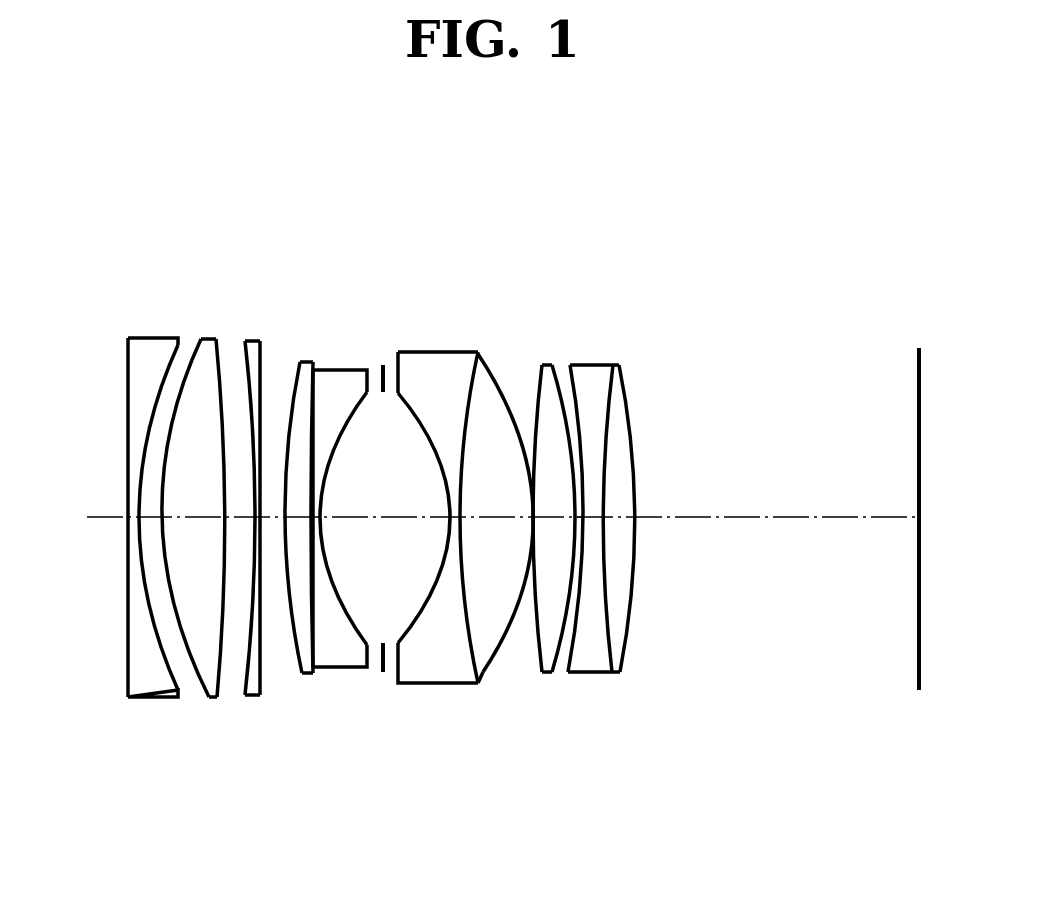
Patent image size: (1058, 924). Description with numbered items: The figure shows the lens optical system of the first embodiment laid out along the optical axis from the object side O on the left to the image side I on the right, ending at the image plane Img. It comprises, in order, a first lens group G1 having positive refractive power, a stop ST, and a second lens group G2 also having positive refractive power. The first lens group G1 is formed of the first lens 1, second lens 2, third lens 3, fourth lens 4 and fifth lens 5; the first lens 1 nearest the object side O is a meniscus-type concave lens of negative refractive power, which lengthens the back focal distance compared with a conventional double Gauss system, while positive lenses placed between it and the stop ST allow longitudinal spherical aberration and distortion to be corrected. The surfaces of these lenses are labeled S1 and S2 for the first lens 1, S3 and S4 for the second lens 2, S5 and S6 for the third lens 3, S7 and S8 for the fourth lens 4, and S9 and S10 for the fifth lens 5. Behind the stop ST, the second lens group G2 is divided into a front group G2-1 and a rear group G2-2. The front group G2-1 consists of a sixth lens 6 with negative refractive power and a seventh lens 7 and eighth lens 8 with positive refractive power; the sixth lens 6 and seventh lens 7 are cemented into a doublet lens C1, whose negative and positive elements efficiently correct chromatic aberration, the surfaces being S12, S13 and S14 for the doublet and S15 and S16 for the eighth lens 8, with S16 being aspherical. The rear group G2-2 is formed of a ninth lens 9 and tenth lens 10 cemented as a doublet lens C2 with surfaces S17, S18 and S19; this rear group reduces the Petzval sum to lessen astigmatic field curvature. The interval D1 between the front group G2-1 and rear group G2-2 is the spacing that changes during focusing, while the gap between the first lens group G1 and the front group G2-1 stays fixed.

The first lens group G1 is at (367, 217).
The second lens group G2 is at (612, 218).
The front group G2-1 is at (560, 278).
The rear group G2-2 is at (638, 278).
The first lens 1 is at (127, 548).
The second lens 2 is at (198, 518).
The third lens 3 is at (272, 512).
The fourth lens 4 is at (317, 528).
The fifth lens 5 is at (354, 564).
The sixth lens 6 is at (420, 527).
The seventh lens 7 is at (505, 527).
The eighth lens 8 is at (551, 525).
The ninth lens 9 is at (631, 533).
The tenth lens 10 is at (659, 562).
The doublet lens C1 is at (490, 763).
The doublet lens C2 is at (638, 763).
The stop ST is at (383, 643).
The lens surface S1 is at (127, 378).
The lens surface S2 is at (147, 422).
The lens surface S3 is at (194, 340).
The lens surface S4 is at (225, 346).
The lens surface S5 is at (246, 344).
The lens surface S6 is at (262, 345).
The lens surface S7 is at (300, 366).
The lens surface S8 is at (316, 372).
The lens surface S9 is at (316, 495).
The lens surface S10 is at (327, 548).
The lens surface S12 is at (427, 438).
The lens surface S13 is at (470, 352).
The lens surface S14 is at (490, 355).
The lens surface S15 is at (533, 408).
The lens surface S16 is at (573, 385).
The lens surface S17 is at (588, 413).
The lens surface S18 is at (607, 422).
The lens surface S19 is at (632, 458).
The interval D1 is at (580, 533).
The object side O is at (62, 519).
The image side I is at (944, 519).
The image plane Img is at (920, 543).